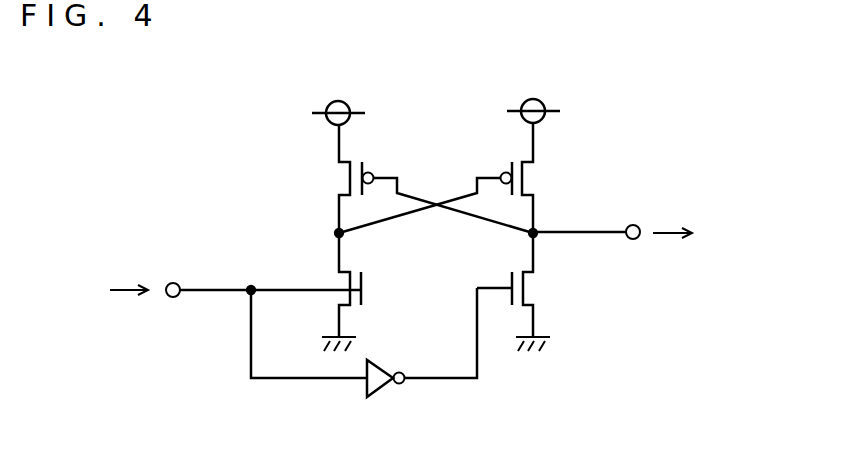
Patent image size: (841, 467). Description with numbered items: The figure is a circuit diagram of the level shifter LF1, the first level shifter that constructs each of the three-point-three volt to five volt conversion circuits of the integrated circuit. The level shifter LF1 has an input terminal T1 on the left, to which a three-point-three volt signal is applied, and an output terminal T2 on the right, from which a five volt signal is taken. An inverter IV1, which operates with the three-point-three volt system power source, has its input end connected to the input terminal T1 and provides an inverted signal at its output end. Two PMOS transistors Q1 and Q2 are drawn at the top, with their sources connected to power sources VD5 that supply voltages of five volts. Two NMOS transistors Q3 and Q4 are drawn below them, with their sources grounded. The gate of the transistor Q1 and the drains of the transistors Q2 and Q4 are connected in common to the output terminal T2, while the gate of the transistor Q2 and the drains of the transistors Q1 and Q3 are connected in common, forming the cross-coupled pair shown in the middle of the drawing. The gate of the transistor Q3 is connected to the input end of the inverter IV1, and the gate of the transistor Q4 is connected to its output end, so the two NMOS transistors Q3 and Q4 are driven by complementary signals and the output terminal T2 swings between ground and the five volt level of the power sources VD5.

The level shifter LF1 is at (750, 118).
The power source VD5 is at (436, 100).
The PMOS transistor Q1 is at (340, 178).
The PMOS transistor Q2 is at (531, 177).
The NMOS transistor Q3 is at (342, 280).
The NMOS transistor Q4 is at (532, 285).
The input terminal T1 is at (177, 296).
The output terminal T2 is at (638, 237).
The inverter IV1 is at (382, 385).